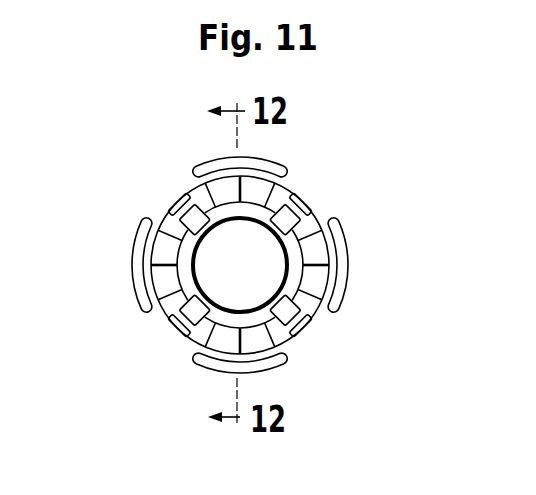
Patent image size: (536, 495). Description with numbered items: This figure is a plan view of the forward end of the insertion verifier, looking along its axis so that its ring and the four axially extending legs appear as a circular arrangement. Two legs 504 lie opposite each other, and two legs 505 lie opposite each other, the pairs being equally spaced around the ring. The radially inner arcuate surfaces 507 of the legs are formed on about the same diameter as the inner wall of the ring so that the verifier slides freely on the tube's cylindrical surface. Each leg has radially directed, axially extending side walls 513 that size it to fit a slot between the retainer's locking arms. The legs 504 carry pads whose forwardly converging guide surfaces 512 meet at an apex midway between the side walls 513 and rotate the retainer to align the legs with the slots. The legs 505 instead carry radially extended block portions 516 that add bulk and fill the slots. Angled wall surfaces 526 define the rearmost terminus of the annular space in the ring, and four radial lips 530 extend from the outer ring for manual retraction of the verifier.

The leg 504 is at (301, 267).
The leg 505 is at (298, 193).
The radially inner arcuate surface 507 is at (192, 226).
The guide surface 512 is at (166, 206).
The side wall 513 is at (195, 196).
The block portion 516 is at (297, 209).
The angled wall surface 526 is at (250, 189).
The radial lip 530 is at (284, 171).